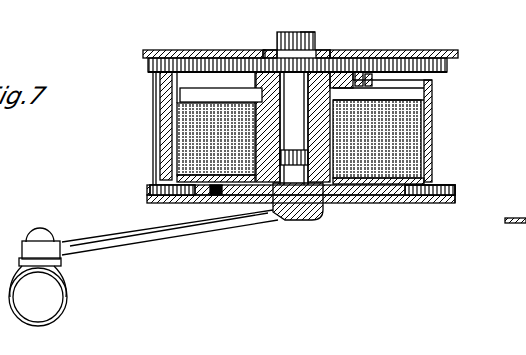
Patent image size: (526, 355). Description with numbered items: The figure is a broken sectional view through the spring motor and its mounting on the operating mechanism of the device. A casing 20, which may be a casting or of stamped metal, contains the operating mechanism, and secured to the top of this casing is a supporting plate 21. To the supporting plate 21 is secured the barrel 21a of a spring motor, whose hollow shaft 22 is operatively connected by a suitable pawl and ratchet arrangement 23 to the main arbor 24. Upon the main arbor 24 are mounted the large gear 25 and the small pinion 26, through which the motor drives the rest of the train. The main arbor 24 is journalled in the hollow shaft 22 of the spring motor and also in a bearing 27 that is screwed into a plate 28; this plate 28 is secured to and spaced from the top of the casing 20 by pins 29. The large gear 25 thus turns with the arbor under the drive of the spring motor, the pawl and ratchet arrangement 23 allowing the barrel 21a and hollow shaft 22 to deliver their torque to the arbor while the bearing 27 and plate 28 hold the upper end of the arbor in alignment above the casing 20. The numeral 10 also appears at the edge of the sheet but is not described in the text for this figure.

The casing 20 is at (405, 202).
The supporting plate 21 is at (432, 190).
The barrel 21a is at (432, 130).
The hollow shaft 22 is at (250, 92).
The pawl and ratchet arrangement 23 is at (372, 80).
The main arbor 24 is at (348, 56).
The large gear 25 is at (448, 69).
The small pinion 26 is at (314, 33).
The bearing 27 is at (265, 49).
The plate 28 is at (219, 51).
The pins 29 is at (153, 113).
The base 10 is at (514, 216).